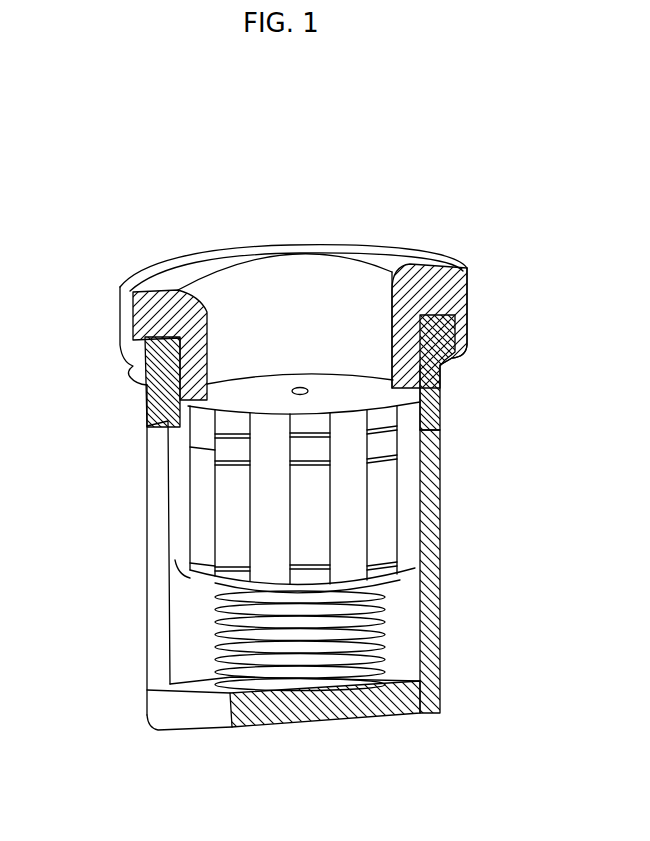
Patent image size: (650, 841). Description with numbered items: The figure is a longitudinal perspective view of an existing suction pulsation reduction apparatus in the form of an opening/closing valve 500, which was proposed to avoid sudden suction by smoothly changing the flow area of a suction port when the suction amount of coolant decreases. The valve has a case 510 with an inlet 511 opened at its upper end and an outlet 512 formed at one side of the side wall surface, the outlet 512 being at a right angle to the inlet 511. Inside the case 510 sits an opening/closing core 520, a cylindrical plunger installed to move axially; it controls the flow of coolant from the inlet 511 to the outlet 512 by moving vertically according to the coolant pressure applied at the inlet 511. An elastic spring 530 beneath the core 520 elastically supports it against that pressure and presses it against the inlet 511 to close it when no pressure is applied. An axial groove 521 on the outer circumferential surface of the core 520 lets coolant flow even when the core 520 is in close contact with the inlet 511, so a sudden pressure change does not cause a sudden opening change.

The opening/closing valve 500 is at (463, 170).
The case 510 is at (441, 622).
The inlet 511 is at (280, 275).
The outlet 512 is at (157, 461).
The opening/closing core 520 is at (387, 513).
The axial groove 521 is at (276, 520).
The elastic spring 530 is at (386, 692).